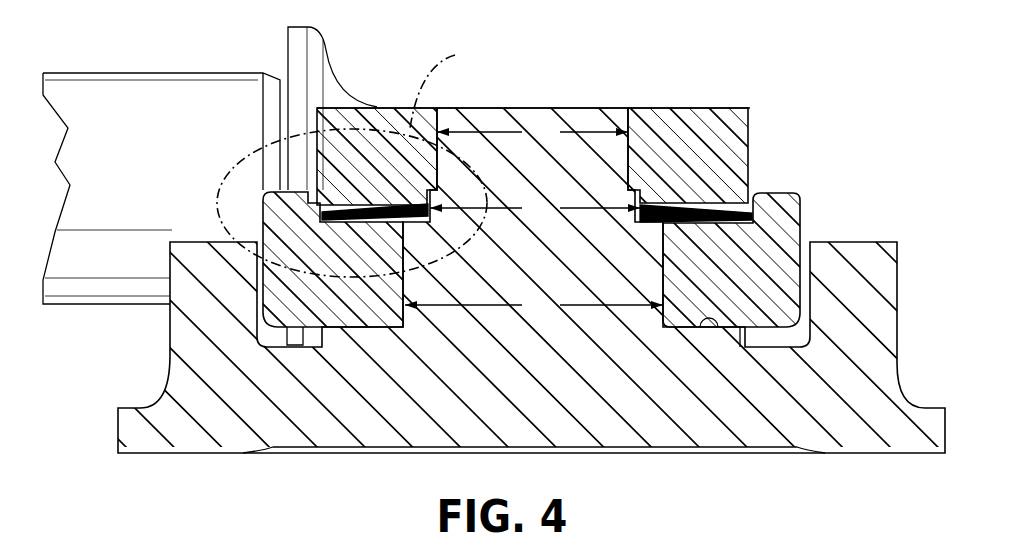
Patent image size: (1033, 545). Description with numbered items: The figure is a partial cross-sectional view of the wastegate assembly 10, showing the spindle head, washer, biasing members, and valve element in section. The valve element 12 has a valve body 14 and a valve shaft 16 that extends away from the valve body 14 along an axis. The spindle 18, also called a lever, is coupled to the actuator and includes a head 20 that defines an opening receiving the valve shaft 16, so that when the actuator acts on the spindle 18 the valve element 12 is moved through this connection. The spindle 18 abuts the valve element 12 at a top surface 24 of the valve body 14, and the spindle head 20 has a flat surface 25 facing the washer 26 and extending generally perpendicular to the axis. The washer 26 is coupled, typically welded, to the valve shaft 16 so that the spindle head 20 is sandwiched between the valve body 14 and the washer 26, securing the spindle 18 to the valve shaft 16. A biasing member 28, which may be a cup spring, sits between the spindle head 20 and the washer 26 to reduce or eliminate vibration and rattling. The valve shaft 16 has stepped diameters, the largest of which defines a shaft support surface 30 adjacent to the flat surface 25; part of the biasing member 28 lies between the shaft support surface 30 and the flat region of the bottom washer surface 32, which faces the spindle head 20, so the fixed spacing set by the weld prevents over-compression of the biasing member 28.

The wastegate assembly 10 is at (858, 90).
The valve element 12 is at (116, 413).
The valve body 14 is at (252, 413).
The valve shaft 16 is at (582, 118).
The spindle 18 is at (152, 107).
The head 20 is at (740, 272).
The top surface 24 is at (722, 330).
The flat surface 25 is at (690, 207).
The washer 26 is at (690, 125).
The biasing member 28 is at (320, 205).
The shaft support surface 30 is at (395, 202).
The bottom washer surface 32 is at (326, 200).